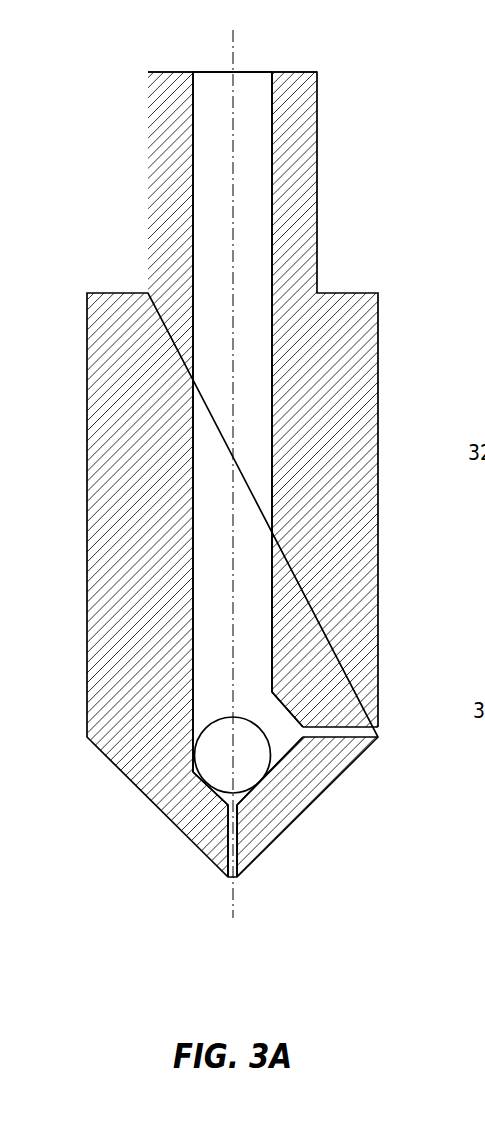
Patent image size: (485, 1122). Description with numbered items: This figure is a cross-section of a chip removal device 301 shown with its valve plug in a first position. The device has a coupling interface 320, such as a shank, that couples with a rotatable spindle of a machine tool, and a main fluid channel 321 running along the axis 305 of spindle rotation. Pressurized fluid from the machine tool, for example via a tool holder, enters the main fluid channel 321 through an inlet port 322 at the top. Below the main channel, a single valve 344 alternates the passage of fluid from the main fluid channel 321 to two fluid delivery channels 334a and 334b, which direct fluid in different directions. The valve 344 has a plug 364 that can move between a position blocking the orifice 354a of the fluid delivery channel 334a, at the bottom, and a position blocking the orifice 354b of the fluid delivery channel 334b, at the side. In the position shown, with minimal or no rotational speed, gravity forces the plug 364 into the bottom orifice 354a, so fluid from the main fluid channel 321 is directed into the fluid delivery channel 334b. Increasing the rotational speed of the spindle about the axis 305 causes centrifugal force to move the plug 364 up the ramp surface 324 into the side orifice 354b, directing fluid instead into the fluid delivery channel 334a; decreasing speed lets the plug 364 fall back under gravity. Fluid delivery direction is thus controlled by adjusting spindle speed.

The chip removal device 301 is at (143, 42).
The axis 305 is at (233, 172).
The coupling interface 320 is at (317, 172).
The main fluid channel 321 is at (212, 455).
The inlet port 322 is at (253, 65).
The ramp surface 324 is at (302, 727).
The fluid delivery channel 334a is at (233, 842).
The fluid delivery channel 334b is at (350, 725).
The valve 344 is at (212, 709).
The orifice 354a is at (228, 808).
The orifice 354b is at (306, 732).
The plug 364 is at (243, 762).